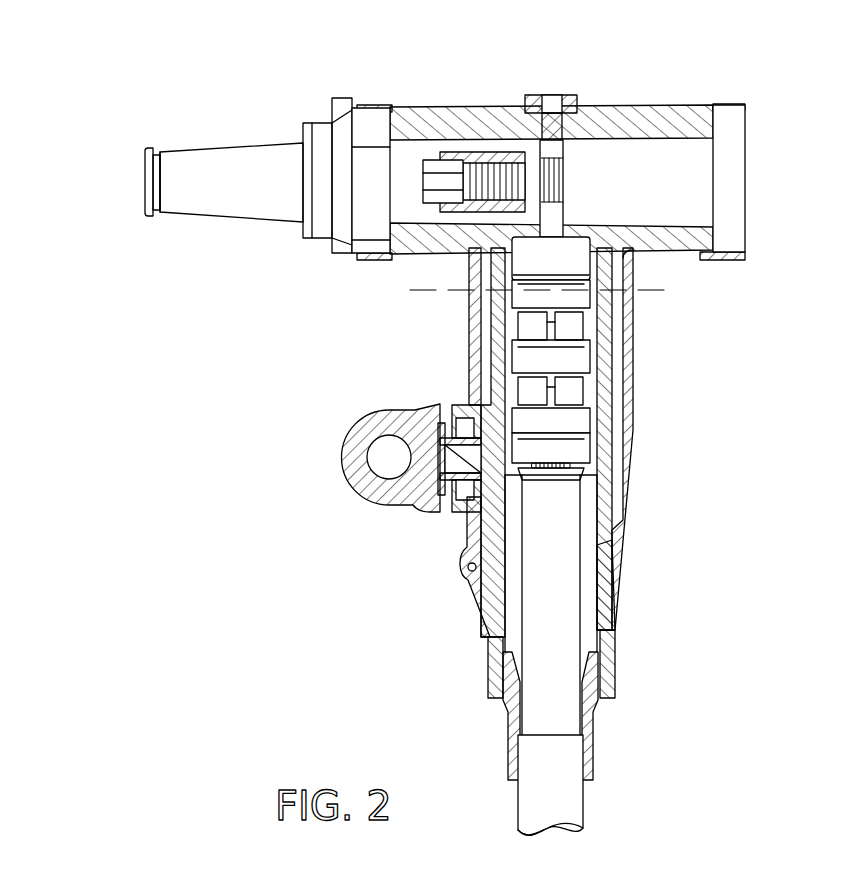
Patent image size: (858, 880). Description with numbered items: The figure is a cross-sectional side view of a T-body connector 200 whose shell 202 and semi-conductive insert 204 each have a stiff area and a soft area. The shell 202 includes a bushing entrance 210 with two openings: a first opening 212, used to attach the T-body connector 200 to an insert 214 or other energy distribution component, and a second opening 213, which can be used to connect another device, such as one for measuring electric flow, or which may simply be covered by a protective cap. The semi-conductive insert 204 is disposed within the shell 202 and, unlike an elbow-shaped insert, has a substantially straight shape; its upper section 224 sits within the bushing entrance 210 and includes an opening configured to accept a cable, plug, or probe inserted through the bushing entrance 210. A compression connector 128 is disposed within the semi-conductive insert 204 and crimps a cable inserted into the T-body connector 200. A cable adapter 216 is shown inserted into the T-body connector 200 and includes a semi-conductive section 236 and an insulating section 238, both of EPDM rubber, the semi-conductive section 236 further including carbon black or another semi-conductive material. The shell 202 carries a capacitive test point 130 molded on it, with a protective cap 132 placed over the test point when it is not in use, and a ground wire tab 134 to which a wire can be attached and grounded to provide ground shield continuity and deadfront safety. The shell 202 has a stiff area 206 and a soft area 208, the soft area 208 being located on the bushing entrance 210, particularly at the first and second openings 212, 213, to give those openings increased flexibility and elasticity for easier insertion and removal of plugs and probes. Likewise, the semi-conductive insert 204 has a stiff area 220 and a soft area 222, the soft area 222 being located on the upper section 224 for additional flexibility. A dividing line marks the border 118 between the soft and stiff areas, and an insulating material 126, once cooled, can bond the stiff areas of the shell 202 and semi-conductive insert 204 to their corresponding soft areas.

The T-body connector 200 is at (142, 111).
The bushing entrance 210 is at (590, 88).
The upper section 224 is at (524, 106).
The second opening 213 is at (747, 130).
The insert 214 is at (226, 220).
The first opening 212 is at (378, 258).
The soft area 208 is at (697, 258).
The soft area 222 is at (607, 280).
The border 118 is at (660, 292).
The compression connector 128 is at (530, 362).
The stiff area 220 is at (605, 367).
The semi-conductive insert 204 is at (607, 473).
The protective cap 132 is at (357, 490).
The insulating material 126 is at (610, 527).
The capacitive test point 130 is at (458, 505).
The stiff area 206 is at (617, 583).
The ground wire tab 134 is at (467, 580).
The insulating section 238 is at (505, 637).
The shell 202 is at (635, 641).
The semi-conductive section 236 is at (590, 720).
The cable adapter 216 is at (505, 802).